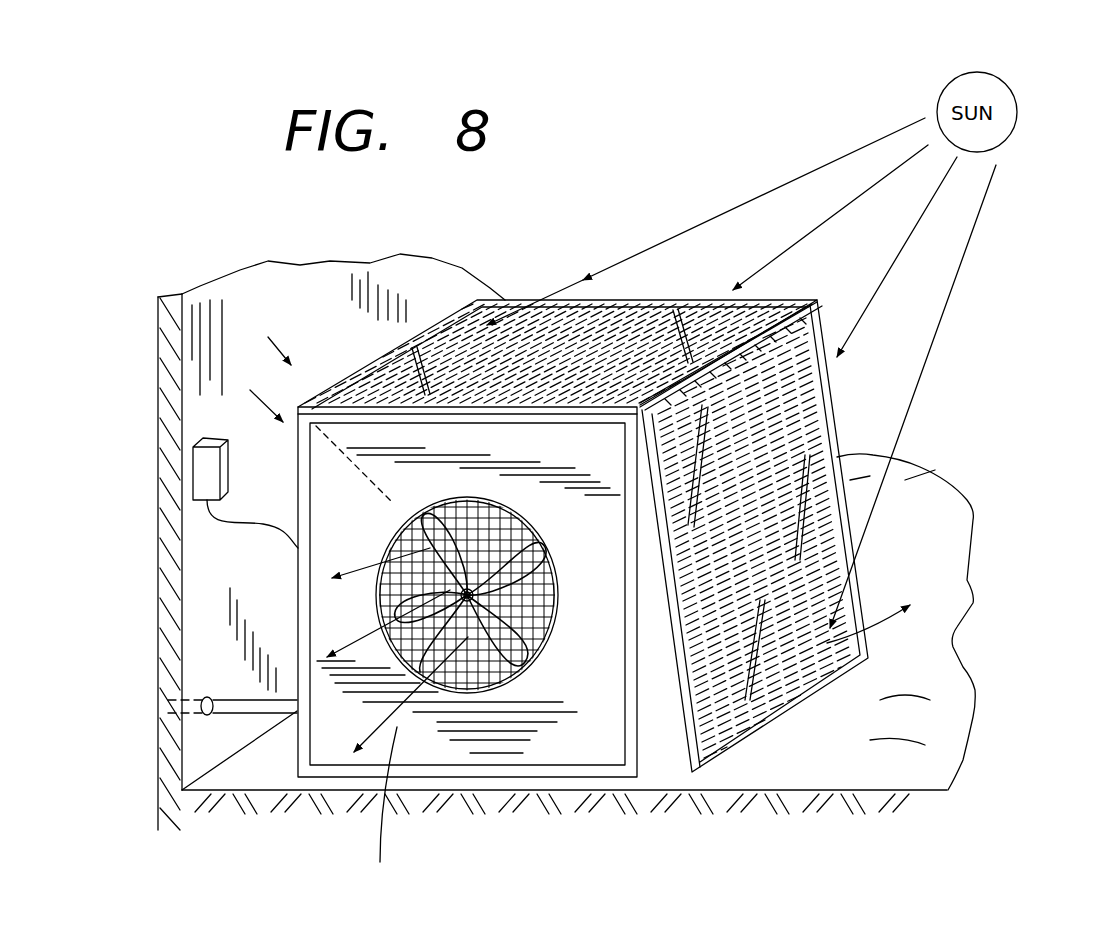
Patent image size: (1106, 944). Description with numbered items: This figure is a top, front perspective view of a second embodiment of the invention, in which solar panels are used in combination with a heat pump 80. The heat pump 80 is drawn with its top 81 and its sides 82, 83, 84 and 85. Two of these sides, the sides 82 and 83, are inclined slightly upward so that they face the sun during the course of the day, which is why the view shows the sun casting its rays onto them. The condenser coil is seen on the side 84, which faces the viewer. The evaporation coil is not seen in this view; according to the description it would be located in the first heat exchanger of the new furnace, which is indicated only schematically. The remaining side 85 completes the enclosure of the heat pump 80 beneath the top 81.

The heat pump 80 is at (240, 220).
The top 81 is at (646, 356).
The side 82 is at (834, 406).
The side 83 is at (667, 300).
The side 84 is at (370, 362).
The side 85 is at (550, 733).